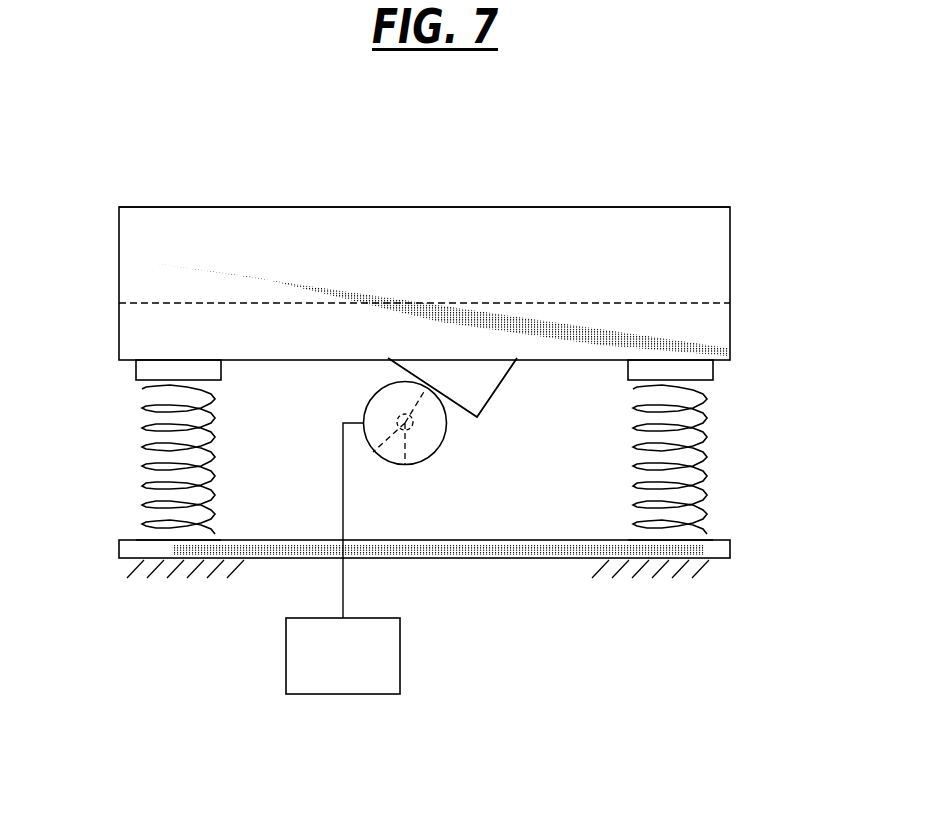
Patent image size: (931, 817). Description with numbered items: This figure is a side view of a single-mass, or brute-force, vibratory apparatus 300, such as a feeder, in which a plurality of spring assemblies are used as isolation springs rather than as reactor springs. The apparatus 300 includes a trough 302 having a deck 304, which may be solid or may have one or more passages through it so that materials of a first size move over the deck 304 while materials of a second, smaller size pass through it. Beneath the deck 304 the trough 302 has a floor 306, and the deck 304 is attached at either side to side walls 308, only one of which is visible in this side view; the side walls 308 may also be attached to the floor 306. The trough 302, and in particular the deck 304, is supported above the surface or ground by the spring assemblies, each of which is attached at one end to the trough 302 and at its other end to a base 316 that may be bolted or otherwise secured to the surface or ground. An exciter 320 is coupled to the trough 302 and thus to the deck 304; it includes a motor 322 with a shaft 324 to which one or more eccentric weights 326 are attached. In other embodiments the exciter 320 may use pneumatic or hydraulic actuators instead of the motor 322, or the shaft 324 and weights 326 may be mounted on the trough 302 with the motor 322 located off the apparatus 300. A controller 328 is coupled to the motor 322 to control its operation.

The apparatus 300 is at (131, 187).
The trough 302 is at (430, 207).
The side wall 308 is at (690, 233).
The deck 304 is at (705, 303).
The floor 306 is at (232, 362).
The base 316 is at (717, 548).
The exciter 320 is at (481, 445).
The motor 322 is at (392, 390).
The shaft 324 is at (373, 452).
The eccentric weight 326 is at (428, 443).
The controller 328 is at (383, 642).